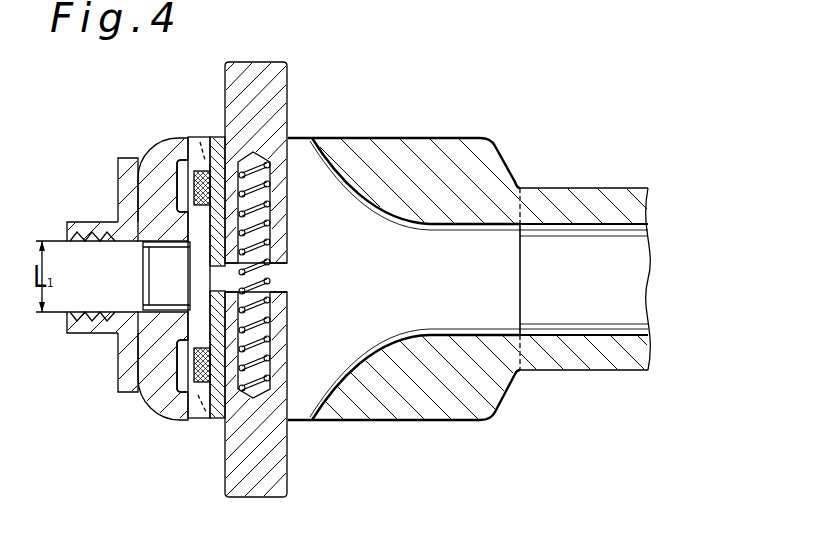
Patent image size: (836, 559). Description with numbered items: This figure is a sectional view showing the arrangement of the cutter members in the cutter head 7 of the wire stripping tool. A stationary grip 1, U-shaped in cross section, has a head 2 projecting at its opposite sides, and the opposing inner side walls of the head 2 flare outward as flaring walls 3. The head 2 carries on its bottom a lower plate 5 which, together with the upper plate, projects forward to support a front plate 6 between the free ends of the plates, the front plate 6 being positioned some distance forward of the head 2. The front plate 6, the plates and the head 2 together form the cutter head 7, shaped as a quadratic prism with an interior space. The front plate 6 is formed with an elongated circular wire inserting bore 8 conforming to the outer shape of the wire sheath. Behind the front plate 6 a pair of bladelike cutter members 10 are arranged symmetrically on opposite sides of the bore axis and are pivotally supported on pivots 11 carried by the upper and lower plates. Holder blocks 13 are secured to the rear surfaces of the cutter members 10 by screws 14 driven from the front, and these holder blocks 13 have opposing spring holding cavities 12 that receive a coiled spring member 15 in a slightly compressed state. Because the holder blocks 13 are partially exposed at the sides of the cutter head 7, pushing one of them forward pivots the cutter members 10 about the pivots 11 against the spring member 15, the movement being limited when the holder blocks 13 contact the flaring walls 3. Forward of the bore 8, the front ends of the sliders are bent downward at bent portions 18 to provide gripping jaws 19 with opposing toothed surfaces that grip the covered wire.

The stationary grip 1 is at (610, 197).
The head 2 is at (483, 160).
The flaring walls 3 is at (385, 222).
The lower plate 5 is at (500, 240).
The front plate 6 is at (150, 387).
The cutter head 7 is at (484, 423).
The wire inserting bore 8 is at (157, 280).
The cutter members 10 is at (218, 138).
The pivots 11 is at (207, 153).
The spring holding cavities 12 is at (272, 244).
The holder blocks 13 is at (285, 70).
The screws 14 is at (186, 148).
The spring member 15 is at (266, 287).
The bent portions 18 is at (128, 190).
The gripping jaws 19 is at (99, 315).